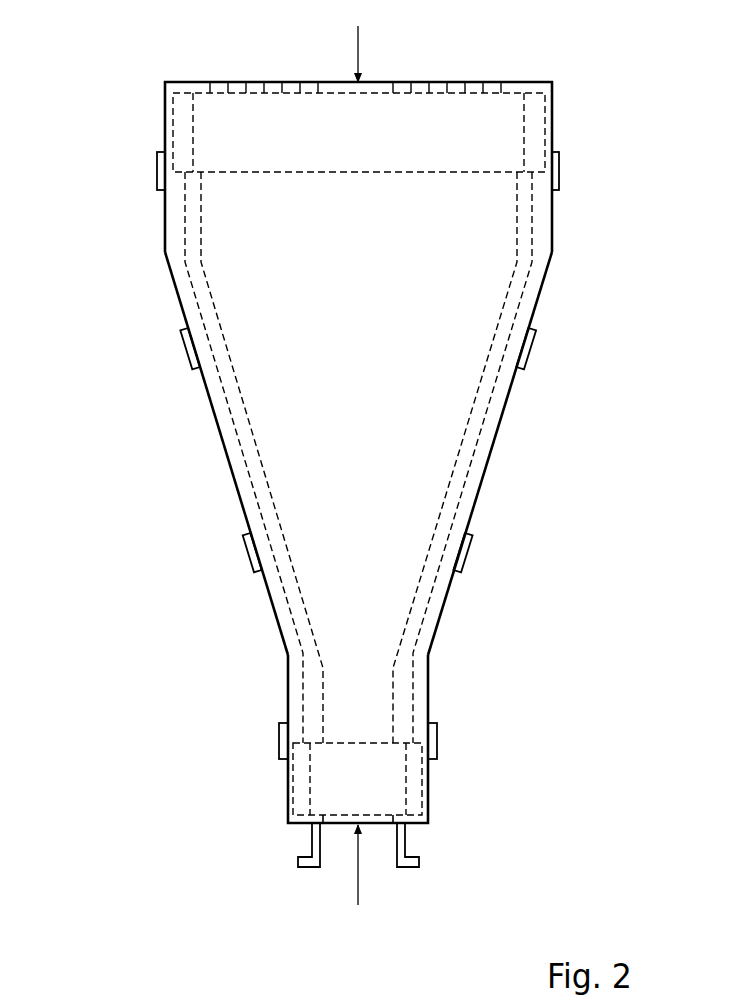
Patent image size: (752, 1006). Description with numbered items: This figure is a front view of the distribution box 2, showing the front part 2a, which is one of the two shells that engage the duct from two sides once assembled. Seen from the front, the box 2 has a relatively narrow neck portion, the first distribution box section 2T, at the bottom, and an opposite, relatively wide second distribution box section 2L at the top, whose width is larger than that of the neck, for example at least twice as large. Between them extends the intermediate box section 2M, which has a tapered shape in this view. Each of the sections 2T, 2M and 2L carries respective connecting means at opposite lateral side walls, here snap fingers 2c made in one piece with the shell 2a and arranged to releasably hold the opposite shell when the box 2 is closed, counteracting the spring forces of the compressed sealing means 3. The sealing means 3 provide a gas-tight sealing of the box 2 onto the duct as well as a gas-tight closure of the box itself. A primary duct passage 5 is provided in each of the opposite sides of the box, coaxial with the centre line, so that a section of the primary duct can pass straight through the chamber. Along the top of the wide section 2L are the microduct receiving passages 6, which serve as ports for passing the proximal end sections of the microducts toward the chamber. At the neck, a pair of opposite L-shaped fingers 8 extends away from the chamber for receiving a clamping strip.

The distribution box 2 is at (326, 452).
The second distribution box section 2L is at (162, 232).
The intermediate box section 2M is at (363, 453).
The first distribution box section 2T is at (440, 781).
The front part (shell) 2a is at (235, 495).
The snap fingers (connecting means) 2c is at (560, 172).
The sealing means 3 is at (324, 784).
The primary duct passage 5 is at (358, 466).
The microduct receiving passages 6 is at (457, 78).
The fingers (mounting section) 8 is at (311, 843).